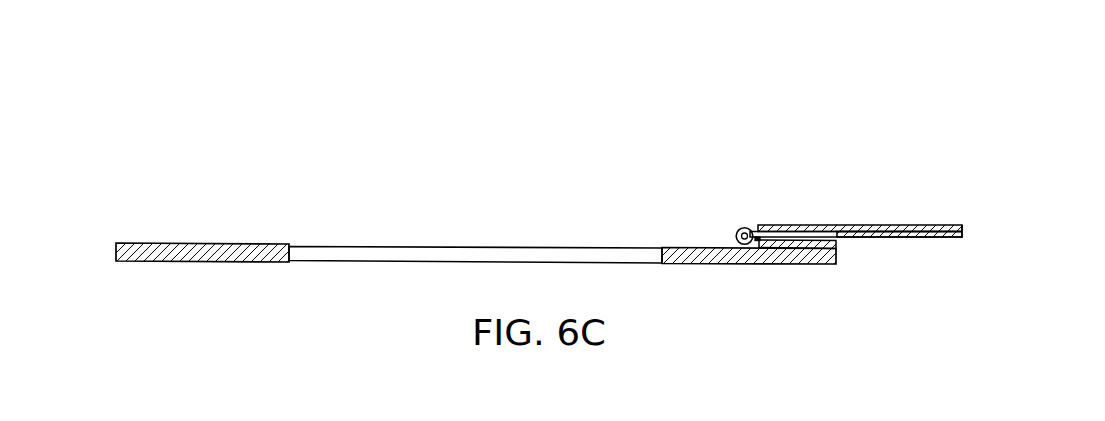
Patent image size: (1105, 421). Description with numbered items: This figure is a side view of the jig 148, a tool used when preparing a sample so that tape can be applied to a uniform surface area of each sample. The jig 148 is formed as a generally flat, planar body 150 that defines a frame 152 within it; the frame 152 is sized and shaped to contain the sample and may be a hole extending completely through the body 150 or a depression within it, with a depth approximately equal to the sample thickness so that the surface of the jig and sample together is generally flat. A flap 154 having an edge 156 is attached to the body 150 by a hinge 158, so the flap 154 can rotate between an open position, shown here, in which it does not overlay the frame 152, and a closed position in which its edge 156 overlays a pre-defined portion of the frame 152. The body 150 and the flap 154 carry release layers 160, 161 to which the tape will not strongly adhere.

The jig 148 is at (1003, 120).
The body 150 is at (240, 262).
The frame 152 is at (462, 248).
The flap 154 is at (873, 225).
The edge 156 is at (964, 228).
The hinge 158 is at (743, 228).
The release layer 160 is at (212, 243).
The release layer 161 is at (898, 239).